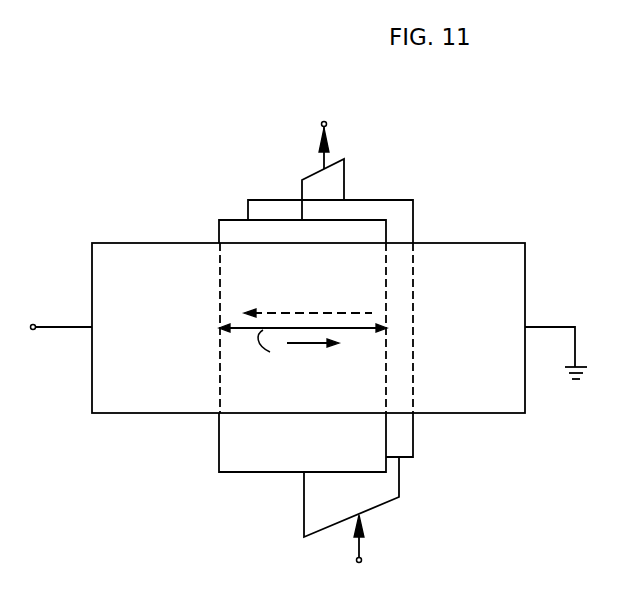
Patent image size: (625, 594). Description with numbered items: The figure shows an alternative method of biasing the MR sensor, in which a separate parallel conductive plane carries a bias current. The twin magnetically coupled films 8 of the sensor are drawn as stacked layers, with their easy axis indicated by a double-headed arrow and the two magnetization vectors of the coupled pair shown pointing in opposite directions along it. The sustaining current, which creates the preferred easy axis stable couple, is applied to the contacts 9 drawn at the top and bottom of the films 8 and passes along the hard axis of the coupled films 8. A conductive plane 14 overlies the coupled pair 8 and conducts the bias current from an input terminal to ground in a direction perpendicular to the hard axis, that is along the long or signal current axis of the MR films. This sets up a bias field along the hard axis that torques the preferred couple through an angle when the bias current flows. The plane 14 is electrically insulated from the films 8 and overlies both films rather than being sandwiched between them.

The coupled films 8 is at (368, 218).
The contacts 9 is at (320, 158).
The conductive plane 14 is at (488, 243).